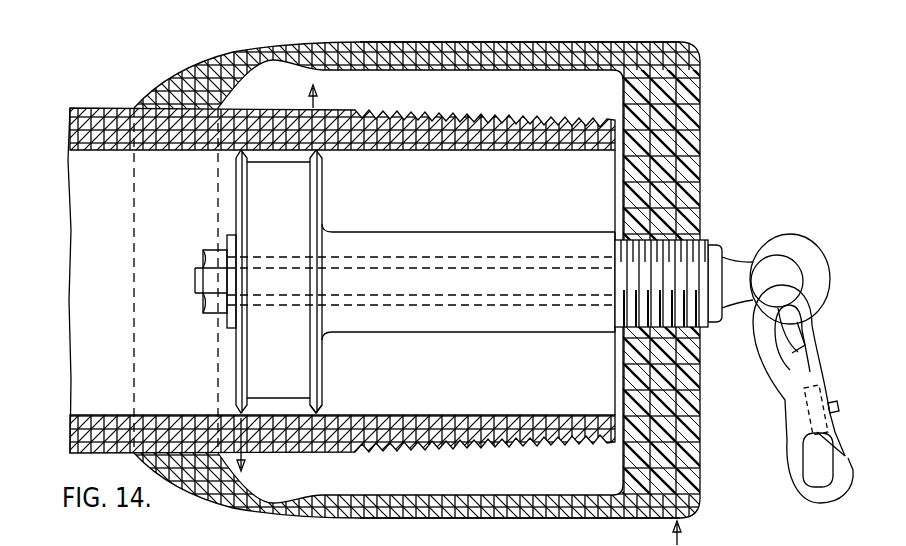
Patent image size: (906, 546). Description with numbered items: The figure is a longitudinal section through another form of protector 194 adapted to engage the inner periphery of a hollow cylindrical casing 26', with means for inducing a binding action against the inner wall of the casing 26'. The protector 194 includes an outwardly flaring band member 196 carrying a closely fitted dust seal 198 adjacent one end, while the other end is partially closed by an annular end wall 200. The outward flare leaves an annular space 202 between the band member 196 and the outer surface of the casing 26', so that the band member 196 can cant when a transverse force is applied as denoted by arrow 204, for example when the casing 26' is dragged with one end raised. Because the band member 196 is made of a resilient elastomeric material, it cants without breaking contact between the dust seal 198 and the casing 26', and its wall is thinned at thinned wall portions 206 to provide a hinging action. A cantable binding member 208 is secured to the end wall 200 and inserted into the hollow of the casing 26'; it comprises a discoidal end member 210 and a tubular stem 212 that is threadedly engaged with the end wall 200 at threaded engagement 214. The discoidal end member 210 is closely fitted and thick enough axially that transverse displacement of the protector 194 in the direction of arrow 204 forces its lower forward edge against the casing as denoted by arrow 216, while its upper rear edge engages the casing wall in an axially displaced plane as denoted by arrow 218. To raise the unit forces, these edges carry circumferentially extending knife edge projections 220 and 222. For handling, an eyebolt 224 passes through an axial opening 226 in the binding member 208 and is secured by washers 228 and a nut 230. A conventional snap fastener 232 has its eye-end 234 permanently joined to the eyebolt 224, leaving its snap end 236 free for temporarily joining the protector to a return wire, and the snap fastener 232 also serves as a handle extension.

The protector 194 is at (460, 42).
The band member 196 is at (505, 55).
The dust seal 198 is at (188, 78).
The annular end wall 200 is at (690, 165).
The annular space 202 is at (548, 85).
The arrow 204 is at (680, 537).
The thinned wall portions 206 is at (276, 47).
The cantable binding member 208 is at (323, 184).
The discoidal end member 210 is at (300, 362).
The tubular stem 212 is at (449, 333).
The threaded engagement 214 is at (699, 346).
The arrow 216 is at (245, 465).
The arrow 218 is at (314, 103).
The knife edge projection 220 is at (237, 155).
The knife edge projection 222 is at (323, 410).
The eyebolt 224 is at (798, 250).
The axial opening 226 is at (477, 306).
The washers 228 is at (230, 244).
The nut 230 is at (208, 288).
The snap fastener 232 is at (800, 406).
The eye-end 234 is at (805, 332).
The snap end 236 is at (814, 493).
The casing 26' is at (341, 280).